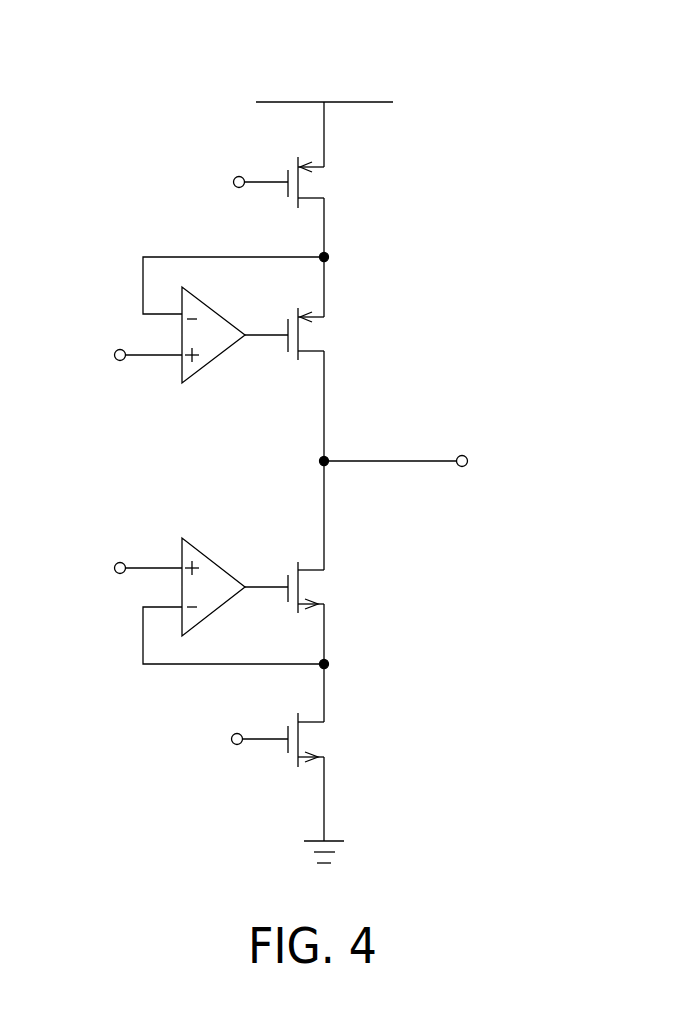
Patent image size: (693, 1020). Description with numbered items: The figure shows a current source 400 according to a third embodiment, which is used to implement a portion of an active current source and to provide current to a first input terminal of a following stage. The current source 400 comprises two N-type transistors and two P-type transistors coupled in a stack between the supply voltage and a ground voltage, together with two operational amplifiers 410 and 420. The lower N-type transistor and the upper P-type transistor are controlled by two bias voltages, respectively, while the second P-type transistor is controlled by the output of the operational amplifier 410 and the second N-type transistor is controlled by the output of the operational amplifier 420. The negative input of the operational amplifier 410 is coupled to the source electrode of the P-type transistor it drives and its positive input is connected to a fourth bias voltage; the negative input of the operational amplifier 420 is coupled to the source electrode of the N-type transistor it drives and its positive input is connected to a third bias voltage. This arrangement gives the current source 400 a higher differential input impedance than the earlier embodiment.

The current source 400 is at (517, 97).
The operational amplifier 410 is at (212, 360).
The operational amplifier 420 is at (213, 562).